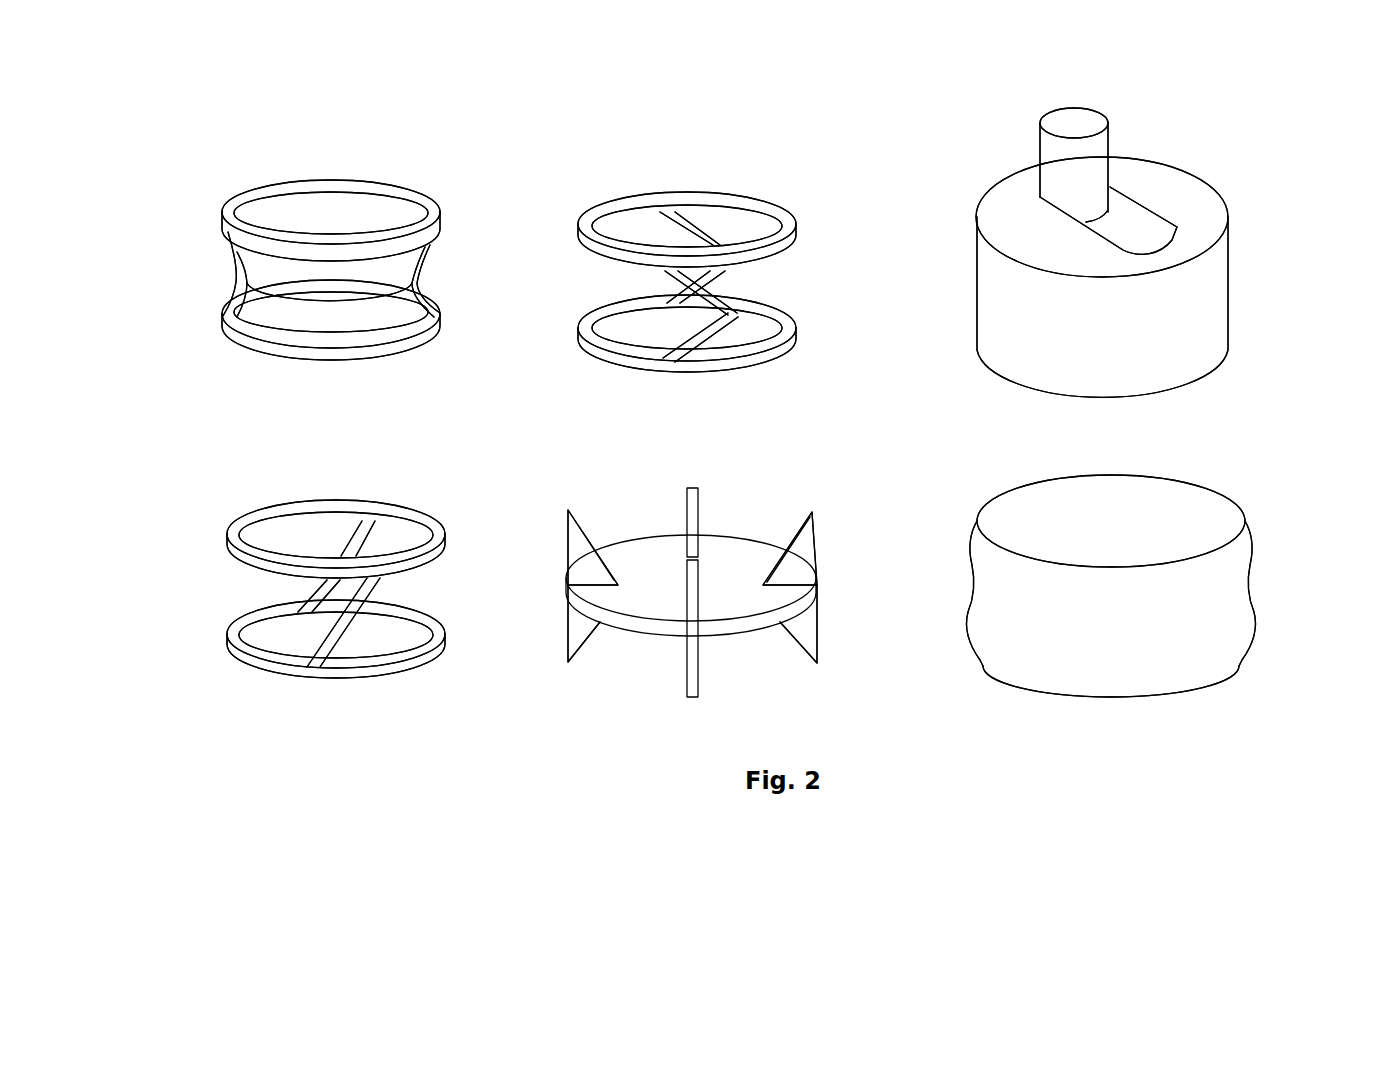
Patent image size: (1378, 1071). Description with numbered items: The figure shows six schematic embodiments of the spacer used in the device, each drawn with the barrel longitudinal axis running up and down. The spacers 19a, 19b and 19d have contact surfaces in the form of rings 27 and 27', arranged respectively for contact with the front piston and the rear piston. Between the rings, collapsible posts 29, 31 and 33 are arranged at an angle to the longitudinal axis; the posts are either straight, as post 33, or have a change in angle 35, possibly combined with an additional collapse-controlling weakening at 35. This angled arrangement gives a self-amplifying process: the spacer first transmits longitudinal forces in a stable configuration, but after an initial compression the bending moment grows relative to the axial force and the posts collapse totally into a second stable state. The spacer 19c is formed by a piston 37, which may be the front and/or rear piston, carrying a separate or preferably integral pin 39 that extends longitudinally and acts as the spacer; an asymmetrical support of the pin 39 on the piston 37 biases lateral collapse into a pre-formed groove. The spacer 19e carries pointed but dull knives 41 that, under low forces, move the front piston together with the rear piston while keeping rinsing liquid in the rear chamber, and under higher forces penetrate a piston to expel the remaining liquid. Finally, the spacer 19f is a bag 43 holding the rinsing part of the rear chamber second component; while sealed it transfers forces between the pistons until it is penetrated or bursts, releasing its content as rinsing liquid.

The spacer 19a is at (436, 162).
The spacer 19b is at (801, 178).
The spacer 19c is at (1226, 164).
The spacer 19d is at (425, 495).
The spacer 19e is at (780, 497).
The spacer 19f is at (1240, 468).
The ring 27 is at (515, 354).
The ring 27' is at (476, 499).
The collapsible post 29 is at (237, 257).
The collapsible post 31 is at (700, 337).
The straight post 33 is at (323, 597).
The change in angle 35 is at (420, 280).
The piston 37 is at (1197, 330).
The pin 39 is at (1083, 153).
The knife 41 is at (805, 548).
The bag 43 is at (1215, 597).